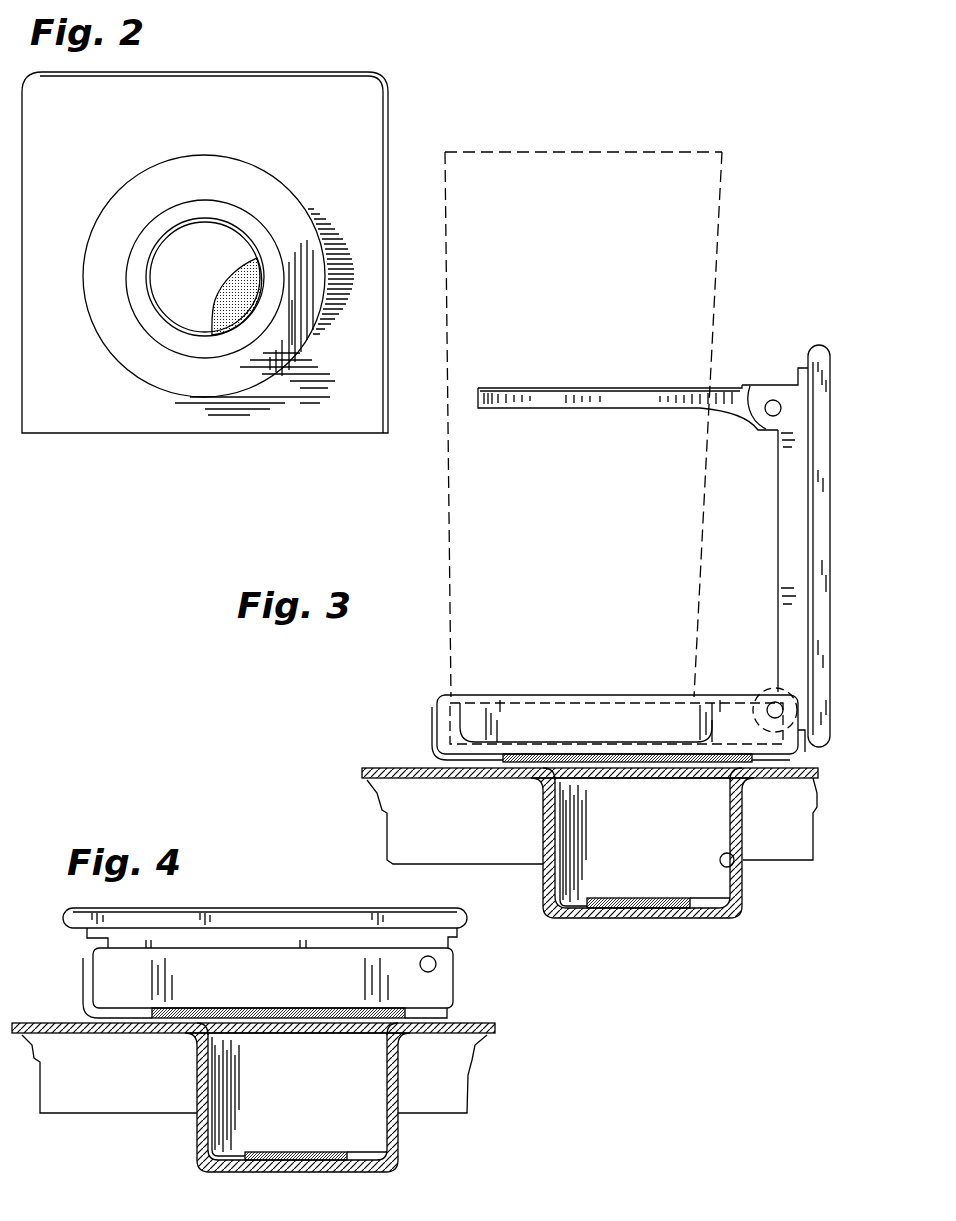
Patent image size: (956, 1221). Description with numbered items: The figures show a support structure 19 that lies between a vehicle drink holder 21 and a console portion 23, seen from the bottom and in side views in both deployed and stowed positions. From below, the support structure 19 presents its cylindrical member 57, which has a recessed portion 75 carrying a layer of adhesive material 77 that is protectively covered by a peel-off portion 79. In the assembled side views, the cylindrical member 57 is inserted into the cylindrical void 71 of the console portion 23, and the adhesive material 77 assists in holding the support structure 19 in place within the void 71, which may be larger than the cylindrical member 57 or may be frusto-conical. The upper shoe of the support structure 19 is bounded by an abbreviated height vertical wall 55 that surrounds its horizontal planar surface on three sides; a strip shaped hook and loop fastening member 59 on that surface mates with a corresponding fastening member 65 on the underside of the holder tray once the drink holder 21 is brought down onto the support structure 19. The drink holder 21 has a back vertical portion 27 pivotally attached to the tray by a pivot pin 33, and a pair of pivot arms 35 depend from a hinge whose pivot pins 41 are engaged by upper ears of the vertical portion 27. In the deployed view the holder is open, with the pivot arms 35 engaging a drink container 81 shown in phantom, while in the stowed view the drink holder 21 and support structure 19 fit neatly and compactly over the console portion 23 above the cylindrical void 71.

In FIG. 2, the support structure 19 is at (120, 445).
In FIG. 3, the support structure 19 is at (408, 714).
In FIG. 4, the support structure 19 is at (269, 1077).
In FIG. 3, the drink holder 21 is at (805, 332).
In FIG. 3, the console portion 23 is at (372, 827).
In FIG. 4, the console portion 23 is at (485, 1068).
In FIG. 3, the back vertical portion 27 is at (831, 473).
In FIG. 4, the back vertical portion 27 is at (268, 908).
In FIG. 3, the pivot pin 33 is at (785, 712).
In FIG. 4, the pivot pin 33 is at (437, 965).
In FIG. 3, the pivot arms 35 is at (492, 402).
In FIG. 3, the pivot pins 41 is at (782, 407).
In FIG. 2, the vertical wall 55 is at (330, 72).
In FIG. 3, the vertical wall 55 is at (432, 724).
In FIG. 4, the vertical wall 55 is at (83, 974).
In FIG. 2, the cylindrical member 57 is at (218, 155).
In FIG. 3, the cylindrical member 57 is at (670, 840).
In FIG. 4, the cylindrical member 57 is at (315, 1093).
In FIG. 3, the fastening member 59 is at (545, 775).
In FIG. 4, the fastening member 59 is at (163, 1030).
In FIG. 3, the fastening member 65 is at (503, 757).
In FIG. 4, the fastening member 65 is at (150, 1013).
In FIG. 3, the cylindrical void 71 is at (741, 870).
In FIG. 2, the recessed portion 75 is at (273, 230).
In FIG. 2, the adhesive material layer 77 is at (253, 302).
In FIG. 3, the adhesive material layer 77 is at (690, 907).
In FIG. 4, the adhesive material layer 77 is at (345, 1162).
In FIG. 2, the peel-off portion 79 is at (200, 287).
In FIG. 3, the drink container 81 is at (626, 152).